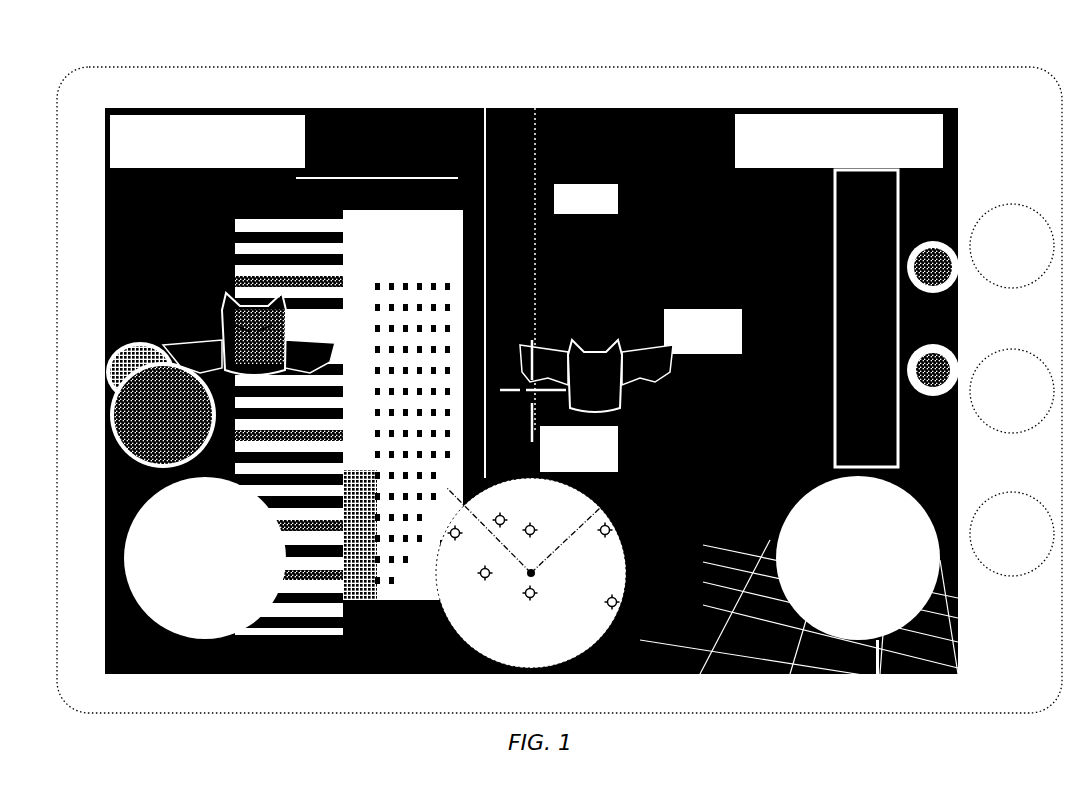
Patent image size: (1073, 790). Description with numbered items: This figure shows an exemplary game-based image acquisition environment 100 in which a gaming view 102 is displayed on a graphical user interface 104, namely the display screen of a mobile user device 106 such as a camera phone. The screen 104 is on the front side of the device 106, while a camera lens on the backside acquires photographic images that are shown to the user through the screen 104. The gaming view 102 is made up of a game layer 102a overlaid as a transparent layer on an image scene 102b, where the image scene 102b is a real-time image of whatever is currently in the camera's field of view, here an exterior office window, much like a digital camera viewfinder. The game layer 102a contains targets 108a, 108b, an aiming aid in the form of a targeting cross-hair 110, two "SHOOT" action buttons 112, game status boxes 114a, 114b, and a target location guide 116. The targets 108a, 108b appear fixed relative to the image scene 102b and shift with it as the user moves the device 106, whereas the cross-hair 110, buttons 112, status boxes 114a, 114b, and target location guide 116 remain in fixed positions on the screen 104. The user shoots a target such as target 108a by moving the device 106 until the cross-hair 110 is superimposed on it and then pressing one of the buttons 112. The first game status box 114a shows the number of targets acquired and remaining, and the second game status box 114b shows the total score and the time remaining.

The game-based image acquisition environment 100 is at (559, 361).
The gaming view 102 is at (532, 376).
The game layer 102a is at (531, 621).
The image scene 102b is at (586, 199).
The graphical user interface 104 is at (1008, 352).
The mobile user device 106 is at (559, 368).
The target 108a is at (631, 360).
The target 108b is at (276, 334).
The aiming aid 110 is at (559, 406).
The action buttons 112 is at (532, 558).
The first game status box 114a is at (841, 124).
The second game status box 114b is at (207, 123).
The target location guide 116 is at (531, 589).